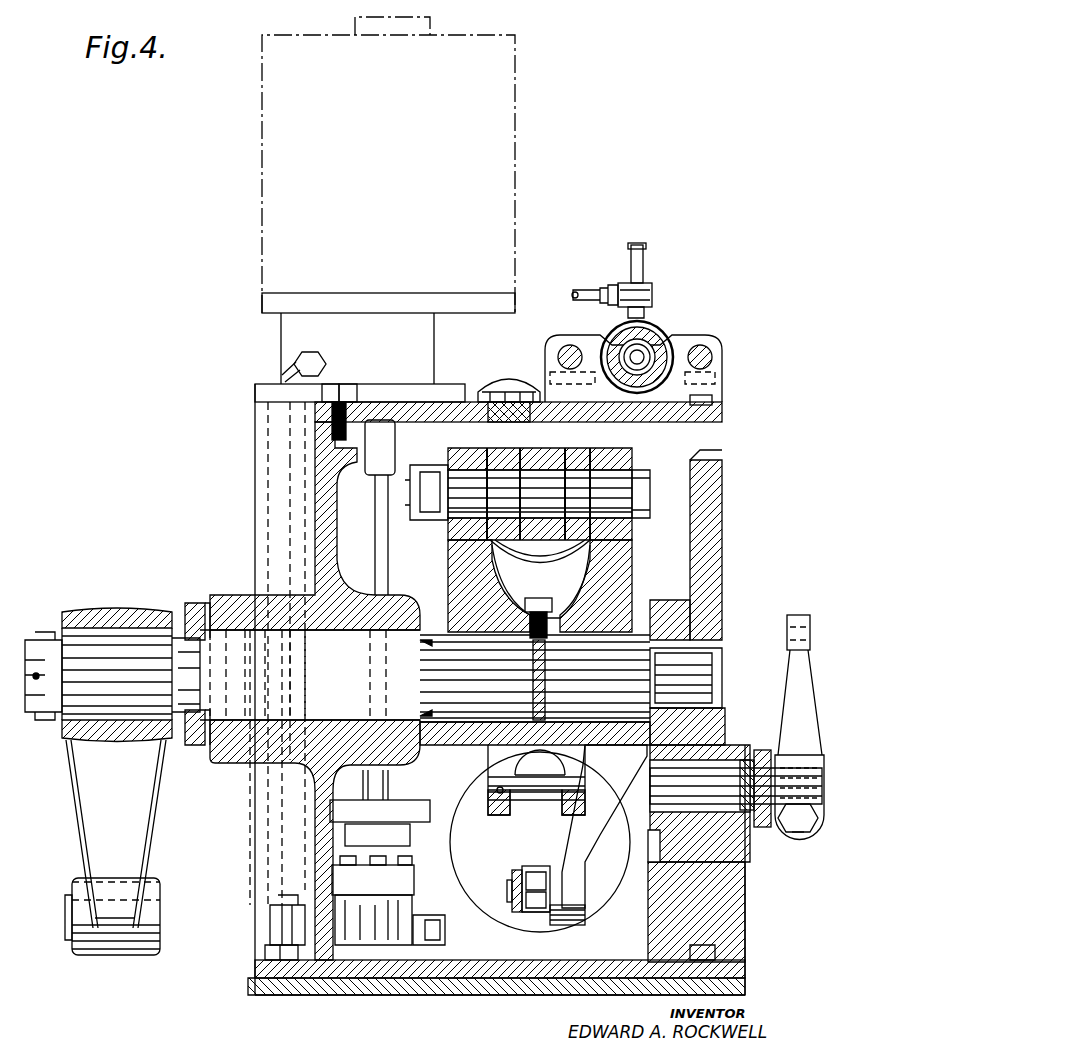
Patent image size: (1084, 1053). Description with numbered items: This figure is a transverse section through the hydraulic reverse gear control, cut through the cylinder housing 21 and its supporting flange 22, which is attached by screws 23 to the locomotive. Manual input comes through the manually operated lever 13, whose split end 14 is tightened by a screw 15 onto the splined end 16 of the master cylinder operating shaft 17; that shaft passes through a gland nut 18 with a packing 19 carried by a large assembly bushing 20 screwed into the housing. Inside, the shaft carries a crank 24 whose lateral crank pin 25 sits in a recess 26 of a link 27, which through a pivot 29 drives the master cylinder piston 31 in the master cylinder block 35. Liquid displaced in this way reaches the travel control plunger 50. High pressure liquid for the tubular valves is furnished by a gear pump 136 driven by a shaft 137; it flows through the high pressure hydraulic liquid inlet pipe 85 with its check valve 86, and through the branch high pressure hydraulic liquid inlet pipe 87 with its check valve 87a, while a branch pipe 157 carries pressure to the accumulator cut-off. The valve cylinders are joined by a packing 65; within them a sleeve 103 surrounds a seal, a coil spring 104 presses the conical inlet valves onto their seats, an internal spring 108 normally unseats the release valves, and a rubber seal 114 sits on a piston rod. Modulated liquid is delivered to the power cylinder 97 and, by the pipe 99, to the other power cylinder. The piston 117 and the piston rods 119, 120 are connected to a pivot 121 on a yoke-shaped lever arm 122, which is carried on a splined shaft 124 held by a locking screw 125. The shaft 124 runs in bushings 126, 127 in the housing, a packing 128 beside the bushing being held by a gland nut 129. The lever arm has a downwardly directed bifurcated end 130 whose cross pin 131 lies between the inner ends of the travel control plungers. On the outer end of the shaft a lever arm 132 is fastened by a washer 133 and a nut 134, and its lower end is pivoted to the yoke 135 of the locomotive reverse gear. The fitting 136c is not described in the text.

The manually operated lever 13 is at (776, 669).
The split end 14 is at (798, 828).
The screw 15 is at (790, 838).
The splined end 16 is at (810, 760).
The master cylinder operating shaft 17 is at (706, 850).
The gland nut 18 is at (742, 815).
The packing 19 is at (762, 748).
The assembly bushing 20 is at (663, 865).
The cylinder housing 21 is at (296, 496).
The supporting flange 22 is at (736, 985).
The screws 23 is at (268, 968).
The crank 24 is at (595, 850).
The crank pin 25 is at (535, 914).
The recess 26 is at (535, 872).
The link 27 is at (514, 882).
The pivot 29 is at (507, 893).
The master cylinder piston 31 is at (559, 878).
The master cylinder block 35 is at (489, 923).
The travel control plunger 50 is at (497, 778).
The packing 65 is at (665, 340).
The high pressure hydraulic liquid inlet pipe 85 is at (275, 885).
The check valve 86 is at (272, 940).
The branch high pressure hydraulic liquid inlet pipe 87 is at (573, 292).
The check valve 87a is at (650, 290).
The power cylinder 97 is at (576, 578).
The pipe 99 is at (645, 246).
The sleeve 103 is at (612, 348).
The coil spring 104 is at (672, 352).
The internal spring 108 is at (660, 363).
The rubber seal 114 is at (640, 355).
The piston 117 is at (560, 545).
The piston rod 119 is at (555, 525).
The piston rod 120 is at (538, 466).
The pivot 121 is at (555, 478).
The lever arm 122 is at (440, 564).
The splined shaft 124 is at (296, 675).
The locking screw 125 is at (562, 606).
The bushing 126 is at (712, 645).
The bushing 127 is at (262, 640).
The packing 128 is at (196, 640).
The gland nut 129 is at (212, 638).
The bifurcated end 130 is at (530, 770).
The cross pin 131 is at (500, 797).
The lever arm 132 is at (116, 834).
The washer 133 is at (150, 618).
The nut 134 is at (50, 636).
The yoke 135 is at (140, 945).
The gear pump 136 is at (357, 948).
The pump fitting 136c is at (433, 948).
The shaft 137 is at (395, 515).
The branch pipe 157 is at (298, 366).